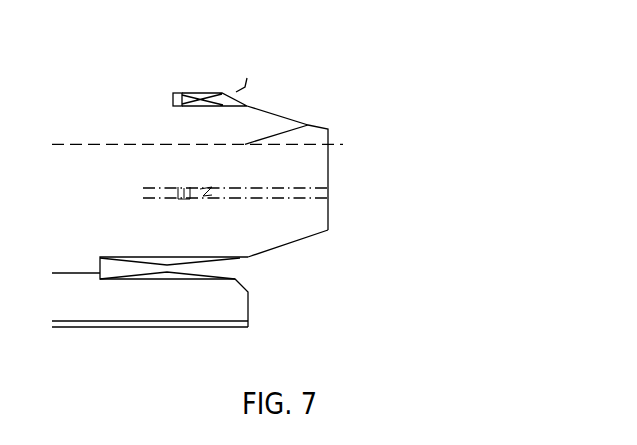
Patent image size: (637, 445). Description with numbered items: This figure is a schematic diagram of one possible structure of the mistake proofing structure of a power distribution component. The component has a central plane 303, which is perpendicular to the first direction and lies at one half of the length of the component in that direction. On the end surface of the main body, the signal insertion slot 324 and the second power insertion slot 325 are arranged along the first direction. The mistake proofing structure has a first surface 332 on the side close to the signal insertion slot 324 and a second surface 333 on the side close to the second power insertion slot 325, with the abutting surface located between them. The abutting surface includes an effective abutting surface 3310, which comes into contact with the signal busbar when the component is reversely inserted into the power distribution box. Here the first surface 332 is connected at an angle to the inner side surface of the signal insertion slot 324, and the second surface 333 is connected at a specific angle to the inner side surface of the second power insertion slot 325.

The signal insertion slot 324 is at (224, 94).
The first surface 332 is at (285, 112).
The central plane 303 is at (308, 125).
The effective abutting surface 3310 is at (328, 193).
The second surface 333 is at (297, 243).
The second power insertion slot 325 is at (221, 280).